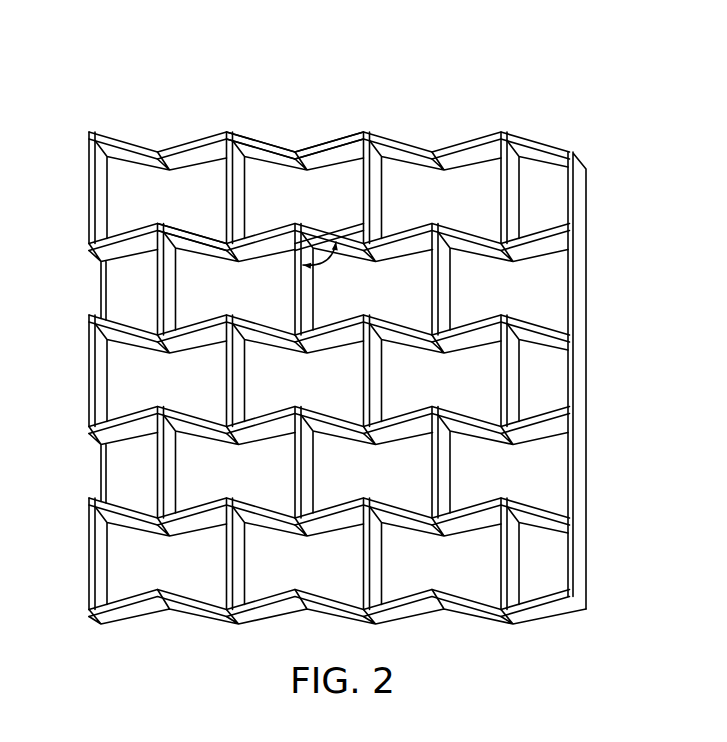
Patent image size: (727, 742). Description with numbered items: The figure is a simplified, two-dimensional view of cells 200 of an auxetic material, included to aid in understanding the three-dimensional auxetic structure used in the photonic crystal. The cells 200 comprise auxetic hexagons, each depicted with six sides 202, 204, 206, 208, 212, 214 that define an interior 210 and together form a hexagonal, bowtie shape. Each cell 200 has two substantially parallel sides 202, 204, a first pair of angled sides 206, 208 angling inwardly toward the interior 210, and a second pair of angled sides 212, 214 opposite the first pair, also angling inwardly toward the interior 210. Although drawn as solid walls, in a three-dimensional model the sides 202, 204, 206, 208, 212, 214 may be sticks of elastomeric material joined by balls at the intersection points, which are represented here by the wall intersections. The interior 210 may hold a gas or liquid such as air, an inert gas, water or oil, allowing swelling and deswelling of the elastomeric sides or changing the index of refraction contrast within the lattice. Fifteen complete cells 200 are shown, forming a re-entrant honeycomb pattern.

The cells 200 is at (420, 115).
The side 202 is at (223, 200).
The side 204 is at (368, 190).
The angled side 206 is at (257, 135).
The angled side 208 is at (337, 135).
The interior 210 is at (293, 187).
The angled side 212 is at (248, 252).
The angled side 214 is at (358, 248).